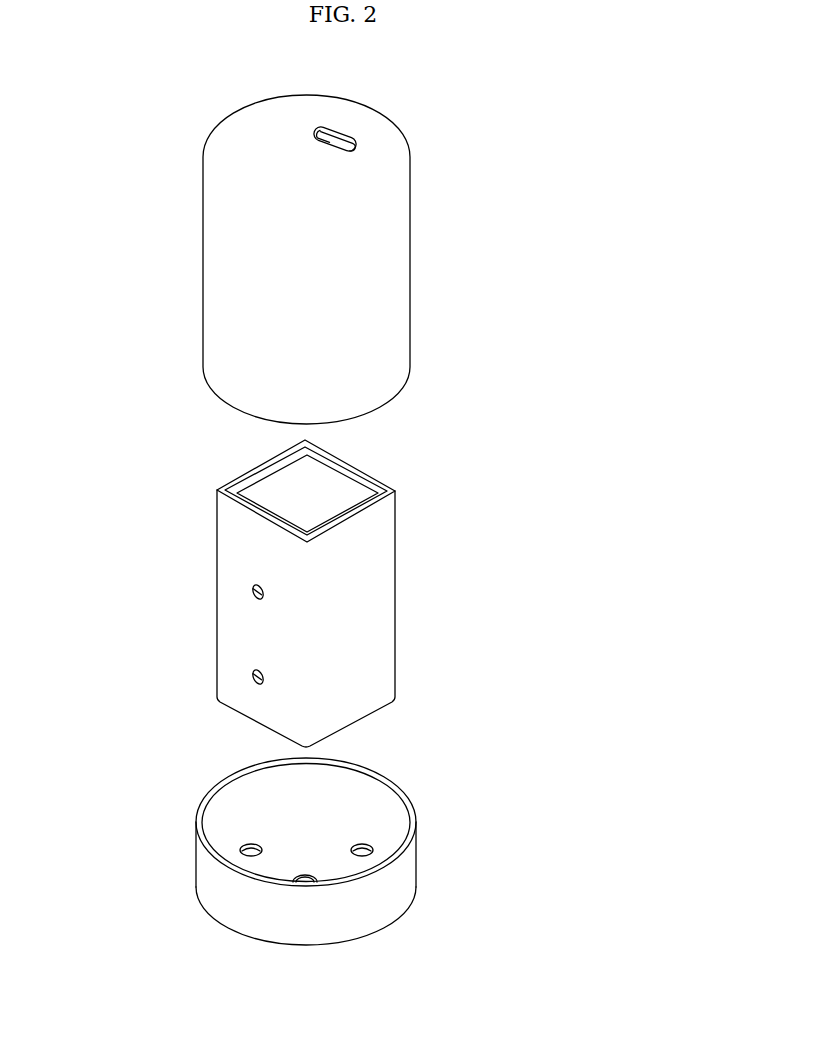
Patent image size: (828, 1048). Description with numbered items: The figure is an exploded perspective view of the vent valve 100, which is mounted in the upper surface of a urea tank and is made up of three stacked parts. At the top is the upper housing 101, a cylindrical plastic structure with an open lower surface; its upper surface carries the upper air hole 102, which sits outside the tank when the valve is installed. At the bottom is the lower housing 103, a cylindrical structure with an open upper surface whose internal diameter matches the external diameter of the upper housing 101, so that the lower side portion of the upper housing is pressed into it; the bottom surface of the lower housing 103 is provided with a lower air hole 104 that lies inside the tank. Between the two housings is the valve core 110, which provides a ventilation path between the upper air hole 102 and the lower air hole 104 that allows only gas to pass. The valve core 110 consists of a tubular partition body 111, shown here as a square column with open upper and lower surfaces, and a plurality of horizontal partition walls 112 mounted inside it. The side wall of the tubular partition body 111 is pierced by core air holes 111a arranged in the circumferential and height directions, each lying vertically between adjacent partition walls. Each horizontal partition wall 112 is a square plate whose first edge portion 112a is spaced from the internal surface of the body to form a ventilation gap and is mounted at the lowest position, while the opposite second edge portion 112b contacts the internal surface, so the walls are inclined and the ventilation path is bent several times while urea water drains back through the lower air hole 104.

The vent valve 100 is at (156, 124).
The upper housing 101 is at (390, 244).
The upper air hole 102 is at (333, 138).
The lower housing 103 is at (348, 822).
The lower air hole 104 is at (362, 846).
The valve core 110 is at (338, 580).
The tubular partition body 111 is at (322, 580).
The core air holes 111a is at (251, 590).
The horizontal partition walls 112 is at (305, 478).
The first edge portion 112a is at (260, 510).
The second edge portion 112b is at (343, 469).